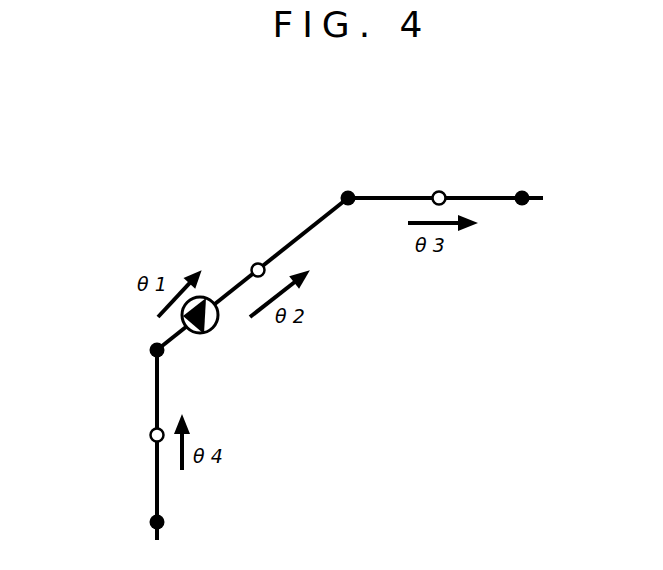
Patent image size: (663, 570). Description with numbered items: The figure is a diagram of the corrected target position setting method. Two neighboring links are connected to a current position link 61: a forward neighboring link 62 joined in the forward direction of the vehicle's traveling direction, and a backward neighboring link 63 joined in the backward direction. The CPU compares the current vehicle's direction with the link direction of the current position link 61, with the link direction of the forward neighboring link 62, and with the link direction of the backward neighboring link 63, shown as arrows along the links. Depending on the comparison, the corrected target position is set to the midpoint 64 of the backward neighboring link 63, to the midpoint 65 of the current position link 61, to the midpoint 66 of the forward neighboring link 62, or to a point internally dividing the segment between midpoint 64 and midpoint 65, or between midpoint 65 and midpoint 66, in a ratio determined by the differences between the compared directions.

The current position link 61 is at (297, 242).
The forward neighboring link 62 is at (398, 197).
The backward neighboring link 63 is at (157, 402).
The midpoint of the backward neighboring link 64 is at (151, 433).
The midpoint of the current position link 65 is at (255, 265).
The midpoint of the forward neighboring link 66 is at (440, 192).